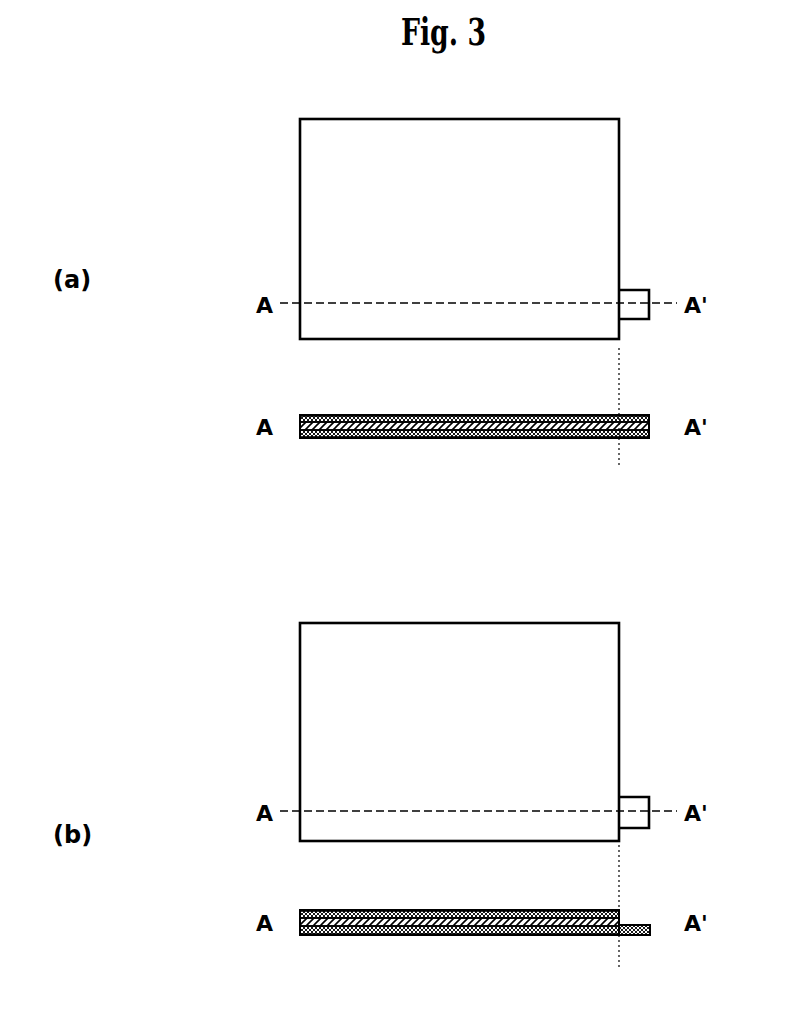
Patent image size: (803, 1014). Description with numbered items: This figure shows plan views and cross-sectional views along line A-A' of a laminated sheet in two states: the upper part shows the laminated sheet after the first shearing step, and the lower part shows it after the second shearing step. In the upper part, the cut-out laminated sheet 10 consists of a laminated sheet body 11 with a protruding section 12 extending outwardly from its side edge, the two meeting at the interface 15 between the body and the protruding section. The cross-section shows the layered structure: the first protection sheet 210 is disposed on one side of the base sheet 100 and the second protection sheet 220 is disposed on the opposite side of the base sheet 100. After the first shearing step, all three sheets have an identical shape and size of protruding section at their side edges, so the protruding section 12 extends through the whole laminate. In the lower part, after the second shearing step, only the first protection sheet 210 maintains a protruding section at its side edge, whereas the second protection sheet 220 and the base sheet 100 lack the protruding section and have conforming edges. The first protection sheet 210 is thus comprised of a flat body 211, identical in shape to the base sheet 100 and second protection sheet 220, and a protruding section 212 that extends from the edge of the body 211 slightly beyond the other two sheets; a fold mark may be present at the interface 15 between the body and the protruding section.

The cut-out laminated sheet 10 is at (463, 541).
The cut-out laminated sheet body 11 is at (330, 210).
The protruding section of the cut-out laminated sheet 12 is at (632, 300).
The interface between the body and the protruding section 15 is at (623, 667).
The base sheet 100 is at (426, 427).
The first protection sheet 210 is at (293, 433).
The second protection sheet 220 is at (296, 409).
The first protection sheet body 211 is at (532, 936).
The protruding section of the first protection sheet 212 is at (632, 810).